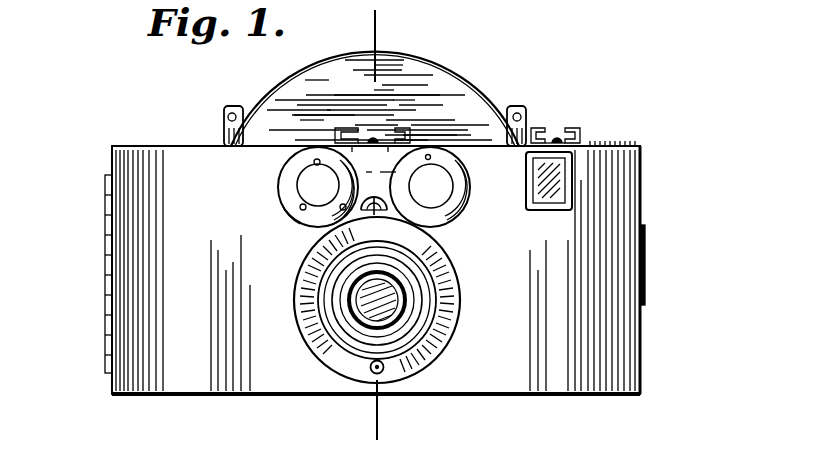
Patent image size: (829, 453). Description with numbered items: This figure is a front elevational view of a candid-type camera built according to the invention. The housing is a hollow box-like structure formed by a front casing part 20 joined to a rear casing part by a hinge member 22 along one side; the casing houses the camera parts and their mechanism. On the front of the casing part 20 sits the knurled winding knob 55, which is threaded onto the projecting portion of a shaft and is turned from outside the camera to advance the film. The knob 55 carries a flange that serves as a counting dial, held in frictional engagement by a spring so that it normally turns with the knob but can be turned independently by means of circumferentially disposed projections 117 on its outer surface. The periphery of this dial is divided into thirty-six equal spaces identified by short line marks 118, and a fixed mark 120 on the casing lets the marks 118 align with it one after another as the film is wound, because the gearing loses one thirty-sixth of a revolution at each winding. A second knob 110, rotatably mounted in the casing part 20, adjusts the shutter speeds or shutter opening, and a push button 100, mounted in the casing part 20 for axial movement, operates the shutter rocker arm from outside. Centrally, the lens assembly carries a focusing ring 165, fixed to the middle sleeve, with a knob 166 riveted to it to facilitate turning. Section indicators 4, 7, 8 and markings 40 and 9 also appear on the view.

The front casing part 20 is at (585, 376).
The hinge member 22 is at (105, 216).
The push button 100 is at (220, 146).
The short line mark 118 is at (355, 150).
The fixed mark 120 is at (385, 150).
The projections 117 is at (299, 172).
The winding knob 55 is at (300, 220).
The knob 110 is at (458, 216).
The dial scale marking 40 is at (391, 173).
The center indicator 9 is at (374, 216).
The focusing ring 165 is at (449, 326).
The knob 166 is at (370, 373).
The section line 8- 8 is at (382, 25).
The section line 4- 4 is at (100, 296).
The section line 7- 7 is at (256, 192).